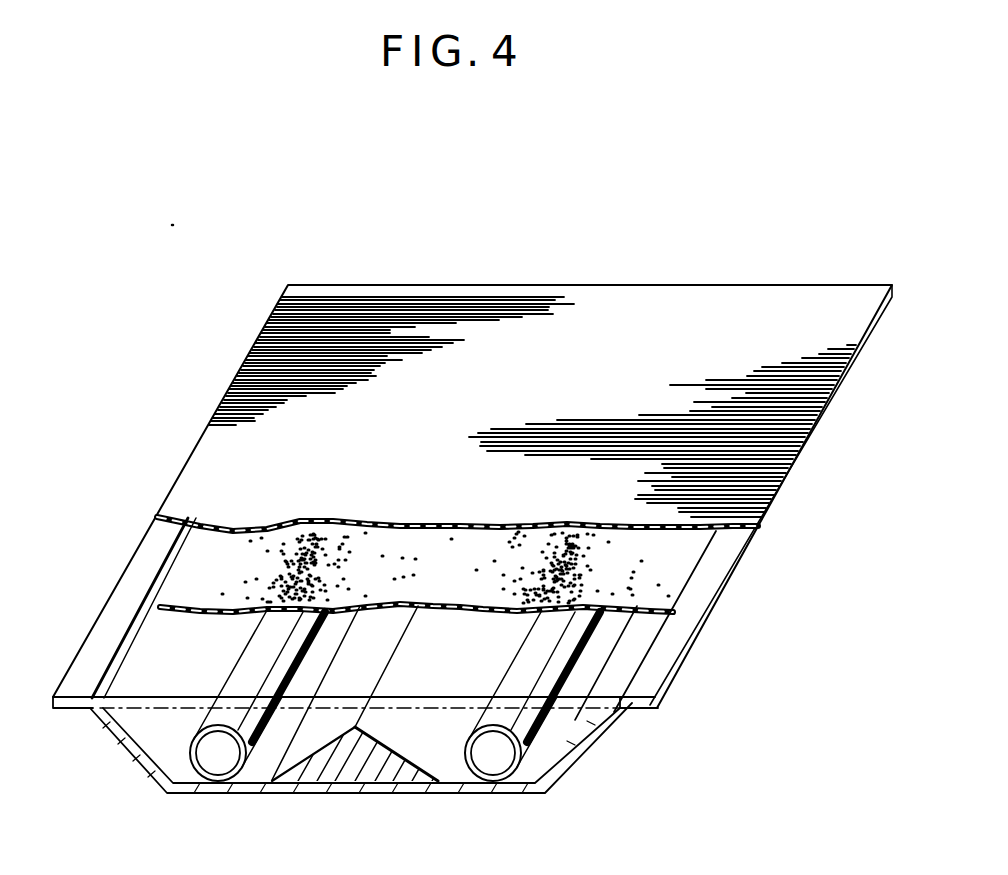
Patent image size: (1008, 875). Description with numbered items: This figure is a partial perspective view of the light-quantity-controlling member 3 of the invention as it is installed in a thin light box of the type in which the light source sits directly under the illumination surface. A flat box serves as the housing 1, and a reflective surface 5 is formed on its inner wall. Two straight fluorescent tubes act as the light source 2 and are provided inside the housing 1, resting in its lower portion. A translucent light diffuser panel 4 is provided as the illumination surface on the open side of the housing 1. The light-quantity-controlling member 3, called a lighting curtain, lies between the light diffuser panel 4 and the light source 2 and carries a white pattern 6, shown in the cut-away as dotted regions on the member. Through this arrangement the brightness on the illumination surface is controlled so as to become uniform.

The housing 1 is at (577, 757).
The light source 2 is at (217, 763).
The light-quantity-controlling member 3 is at (180, 588).
The light diffuser panel 4 is at (210, 425).
The reflective surface 5 is at (147, 737).
The white pattern 6 is at (313, 521).